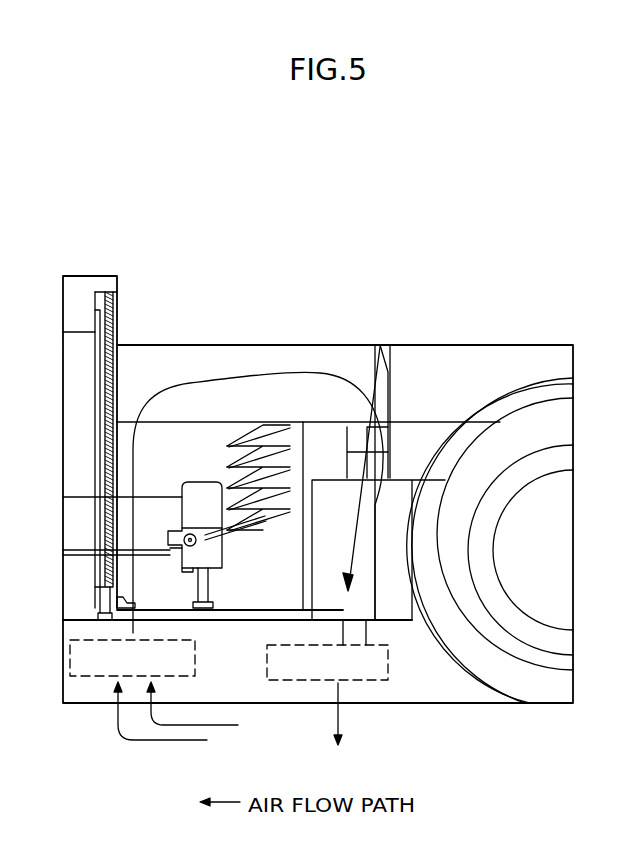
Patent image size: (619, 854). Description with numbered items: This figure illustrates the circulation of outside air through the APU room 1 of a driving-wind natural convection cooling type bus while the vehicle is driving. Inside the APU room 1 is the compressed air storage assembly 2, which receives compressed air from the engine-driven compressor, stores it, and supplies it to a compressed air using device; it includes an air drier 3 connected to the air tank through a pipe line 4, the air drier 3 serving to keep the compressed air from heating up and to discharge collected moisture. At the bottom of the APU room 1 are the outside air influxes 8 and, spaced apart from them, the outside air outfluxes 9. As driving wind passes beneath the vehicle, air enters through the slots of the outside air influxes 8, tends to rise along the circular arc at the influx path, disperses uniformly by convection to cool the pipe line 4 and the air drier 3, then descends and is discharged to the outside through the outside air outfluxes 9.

The APU room 1 is at (146, 360).
The compressed air storage assembly 2 is at (263, 416).
The air drier 3 is at (203, 486).
The pipe line 4 is at (283, 416).
The outside air influxes 8 is at (88, 663).
The outside air outfluxes 9 is at (368, 667).